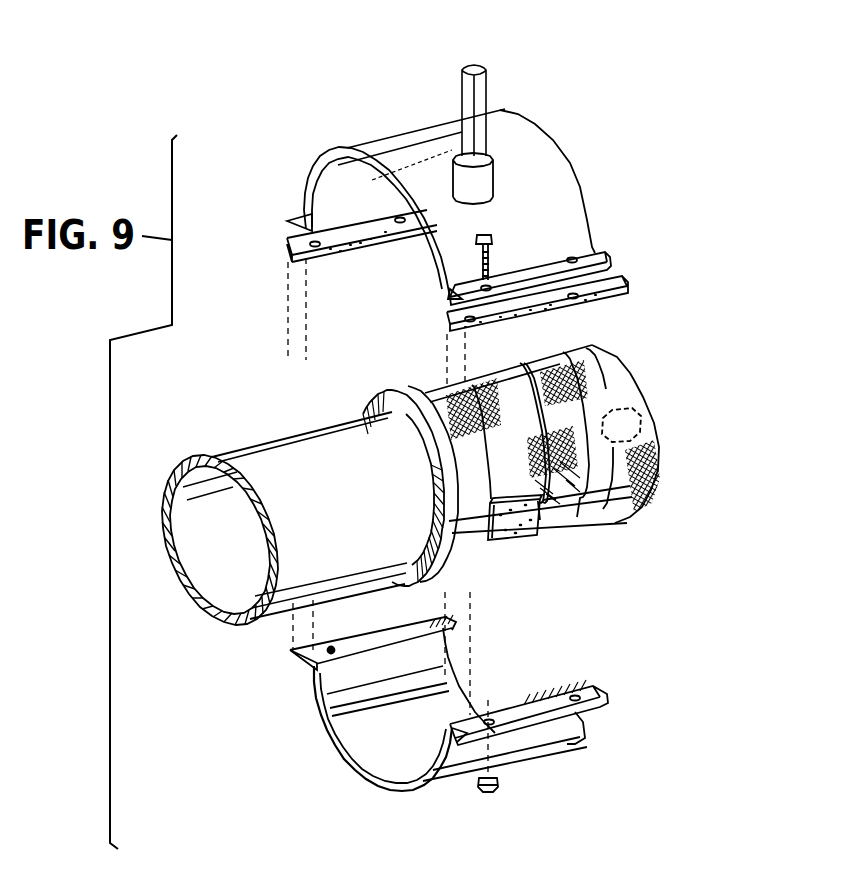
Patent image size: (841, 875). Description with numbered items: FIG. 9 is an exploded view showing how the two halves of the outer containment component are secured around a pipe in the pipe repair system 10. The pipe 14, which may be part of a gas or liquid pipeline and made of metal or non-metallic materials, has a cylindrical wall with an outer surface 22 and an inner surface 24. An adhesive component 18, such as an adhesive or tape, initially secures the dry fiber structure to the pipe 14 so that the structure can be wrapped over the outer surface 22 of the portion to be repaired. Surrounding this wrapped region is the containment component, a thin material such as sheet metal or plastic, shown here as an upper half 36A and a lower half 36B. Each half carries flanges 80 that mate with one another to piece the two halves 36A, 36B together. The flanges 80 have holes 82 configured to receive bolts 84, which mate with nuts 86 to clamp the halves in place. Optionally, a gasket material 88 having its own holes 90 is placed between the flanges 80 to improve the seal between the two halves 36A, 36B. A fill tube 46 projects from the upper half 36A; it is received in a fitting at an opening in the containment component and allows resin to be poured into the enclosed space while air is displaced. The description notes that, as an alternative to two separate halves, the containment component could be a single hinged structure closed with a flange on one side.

The pipe repair system 10 is at (640, 133).
The pipe 14 is at (261, 436).
The adhesive component 18 is at (514, 535).
The outer surface 22 is at (349, 518).
The inner surface 24 is at (223, 575).
The first half of containment component 36A is at (540, 137).
The second half of containment component 36B is at (380, 738).
The fill tube 46 is at (490, 107).
The flanges 80 is at (595, 248).
The holes 82 is at (570, 256).
The bolts 84 is at (494, 252).
The nuts 86 is at (481, 790).
The gasket material 88 is at (612, 272).
The holes 90 is at (572, 296).